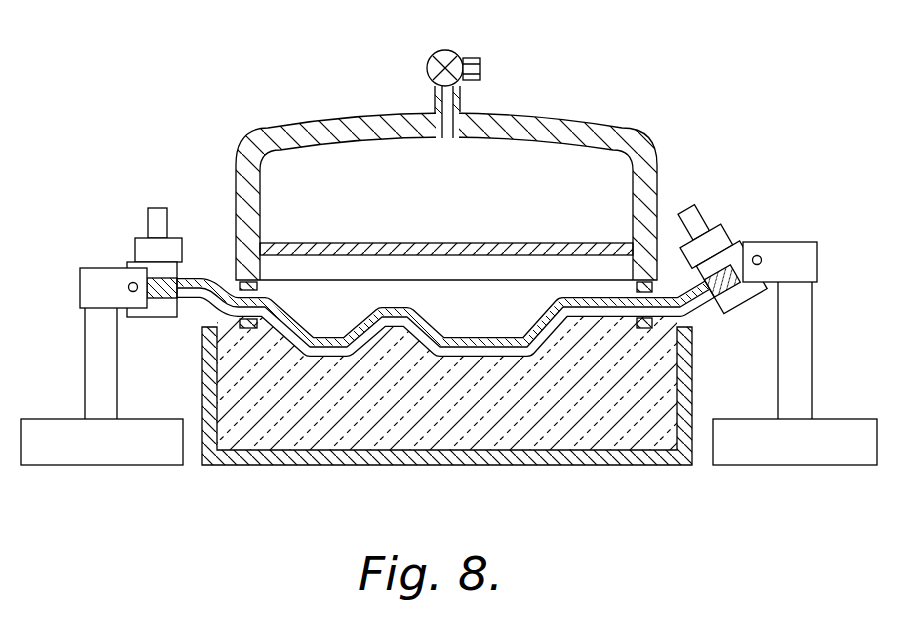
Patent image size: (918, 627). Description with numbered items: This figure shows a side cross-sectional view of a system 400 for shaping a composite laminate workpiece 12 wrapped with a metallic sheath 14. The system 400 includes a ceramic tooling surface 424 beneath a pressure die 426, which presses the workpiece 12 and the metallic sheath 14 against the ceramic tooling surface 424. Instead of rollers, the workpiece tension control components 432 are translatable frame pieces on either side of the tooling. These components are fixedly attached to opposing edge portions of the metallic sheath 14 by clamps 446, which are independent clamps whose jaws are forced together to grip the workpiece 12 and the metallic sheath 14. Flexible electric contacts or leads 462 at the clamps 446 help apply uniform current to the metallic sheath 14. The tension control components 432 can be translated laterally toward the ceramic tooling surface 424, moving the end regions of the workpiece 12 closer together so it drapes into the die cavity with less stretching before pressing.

The system 400 is at (449, 294).
The workpiece 12 is at (470, 335).
The metallic sheath 14 is at (382, 310).
The ceramic tooling surface 424 is at (330, 357).
The pressure die 426 is at (325, 133).
The clamps 446 is at (157, 272).
The flexible electric contacts or leads 462 is at (160, 300).
The workpiece tension control components 432 is at (85, 448).